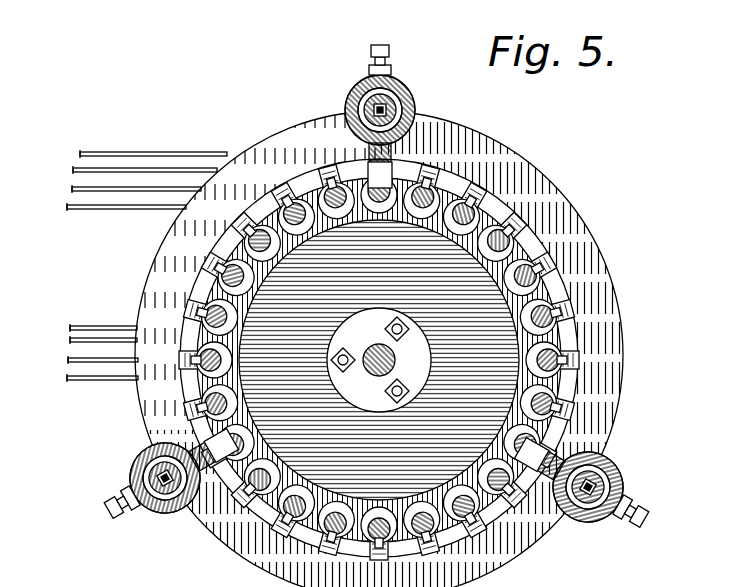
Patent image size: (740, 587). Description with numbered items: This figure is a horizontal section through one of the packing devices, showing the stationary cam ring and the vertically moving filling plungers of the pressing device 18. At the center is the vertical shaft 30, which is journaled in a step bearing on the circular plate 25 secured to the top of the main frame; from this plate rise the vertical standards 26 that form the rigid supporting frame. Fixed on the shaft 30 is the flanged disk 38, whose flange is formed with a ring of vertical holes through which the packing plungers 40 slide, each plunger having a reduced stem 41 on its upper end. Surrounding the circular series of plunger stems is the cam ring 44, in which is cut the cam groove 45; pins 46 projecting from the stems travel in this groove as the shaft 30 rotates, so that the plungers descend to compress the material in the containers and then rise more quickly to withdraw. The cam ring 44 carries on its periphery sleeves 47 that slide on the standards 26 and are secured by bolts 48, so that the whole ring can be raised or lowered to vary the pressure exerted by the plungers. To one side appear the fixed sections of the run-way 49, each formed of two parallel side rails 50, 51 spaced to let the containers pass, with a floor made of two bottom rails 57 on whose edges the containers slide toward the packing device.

The pressing device 18 is at (379, 360).
The circular plate 25 is at (143, 408).
The vertical standard 26 is at (400, 108).
The vertical shaft 30 is at (380, 350).
The flanged disk 38 is at (462, 481).
The packing plunger 40 is at (540, 358).
The reduced stem 41 is at (228, 356).
The cam ring 44 is at (190, 287).
The cam groove 45 is at (232, 236).
The pin 46 is at (510, 228).
The sleeve 47 is at (172, 513).
The bolt 48 is at (375, 50).
The run-way section 49 is at (123, 265).
The side rail 50 is at (93, 327).
The side rail 51 is at (78, 381).
The bottom rail 57 is at (102, 190).